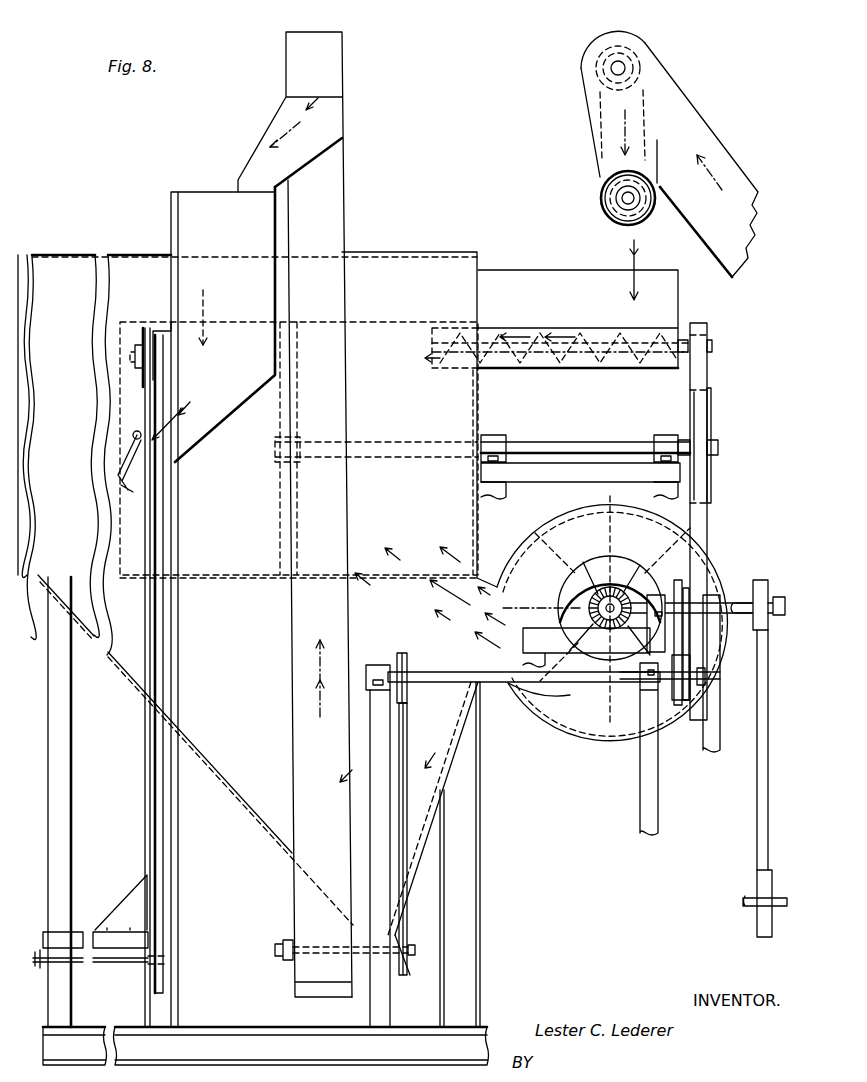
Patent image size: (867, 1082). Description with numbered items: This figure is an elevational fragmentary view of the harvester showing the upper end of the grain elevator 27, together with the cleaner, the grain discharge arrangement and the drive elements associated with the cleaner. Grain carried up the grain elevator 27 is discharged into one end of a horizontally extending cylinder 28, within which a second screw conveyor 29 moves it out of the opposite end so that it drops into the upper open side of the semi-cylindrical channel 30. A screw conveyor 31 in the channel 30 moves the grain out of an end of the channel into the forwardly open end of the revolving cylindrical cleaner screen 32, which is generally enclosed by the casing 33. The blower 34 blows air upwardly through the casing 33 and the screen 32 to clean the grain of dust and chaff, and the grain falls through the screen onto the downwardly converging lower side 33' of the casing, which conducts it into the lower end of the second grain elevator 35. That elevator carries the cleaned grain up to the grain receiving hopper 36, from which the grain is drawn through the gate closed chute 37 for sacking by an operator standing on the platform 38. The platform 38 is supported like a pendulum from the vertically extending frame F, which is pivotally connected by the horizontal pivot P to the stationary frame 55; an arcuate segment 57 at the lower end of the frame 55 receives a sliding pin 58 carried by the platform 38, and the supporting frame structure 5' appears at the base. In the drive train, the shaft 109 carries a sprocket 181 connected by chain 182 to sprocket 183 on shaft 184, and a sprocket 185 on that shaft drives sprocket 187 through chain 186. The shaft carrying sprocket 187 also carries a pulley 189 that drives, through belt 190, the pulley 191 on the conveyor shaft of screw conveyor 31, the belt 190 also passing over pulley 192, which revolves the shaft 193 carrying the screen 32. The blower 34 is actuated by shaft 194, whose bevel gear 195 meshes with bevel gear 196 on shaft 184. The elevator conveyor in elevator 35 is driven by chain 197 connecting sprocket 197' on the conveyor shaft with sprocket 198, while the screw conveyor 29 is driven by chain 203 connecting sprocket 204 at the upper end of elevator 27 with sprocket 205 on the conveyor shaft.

The second grain elevator 35 is at (344, 153).
The grain receiving hopper 36 is at (202, 198).
The casing 33 is at (264, 406).
The cleaner screen 32 is at (373, 323).
The horizontal pivot P is at (134, 357).
The gate closed chute 37 is at (131, 424).
The vertically extending frame F is at (145, 806).
The lower side of casing 33' is at (280, 755).
The platform 38 is at (79, 932).
The sliding pin 58 is at (110, 958).
The arcuate segment 57 is at (165, 888).
The stationary frame 55 is at (179, 921).
The base channel 5' is at (407, 1068).
The channel 30 is at (652, 367).
The screw conveyor 31 is at (614, 361).
The shaft 193 is at (623, 443).
The pulley 191 is at (708, 331).
The pulley 192 is at (712, 412).
The belt 190 is at (710, 528).
The blower 34 is at (548, 698).
The bevel gear 196 is at (632, 585).
The bevel gear 195 is at (604, 582).
The blower shaft 194 is at (598, 617).
The sprocket 185 is at (690, 582).
The chain 186 is at (680, 640).
The sprocket 183 is at (774, 583).
The shaft 184 is at (783, 600).
The pulley 189 is at (690, 678).
The sprocket 187 is at (668, 700).
The chain 182 is at (769, 758).
The sprocket 181 is at (773, 877).
The shaft 109 is at (745, 905).
The sprocket 198 is at (409, 667).
The chain 197 is at (426, 839).
The sprocket 197' is at (401, 941).
The sprocket 204 is at (641, 85).
The chain 203 is at (645, 132).
The grain elevator 27 is at (735, 160).
The horizontally extending cylinder 28 is at (652, 220).
The sprocket 205 is at (615, 185).
The second screw conveyor 29 is at (628, 206).